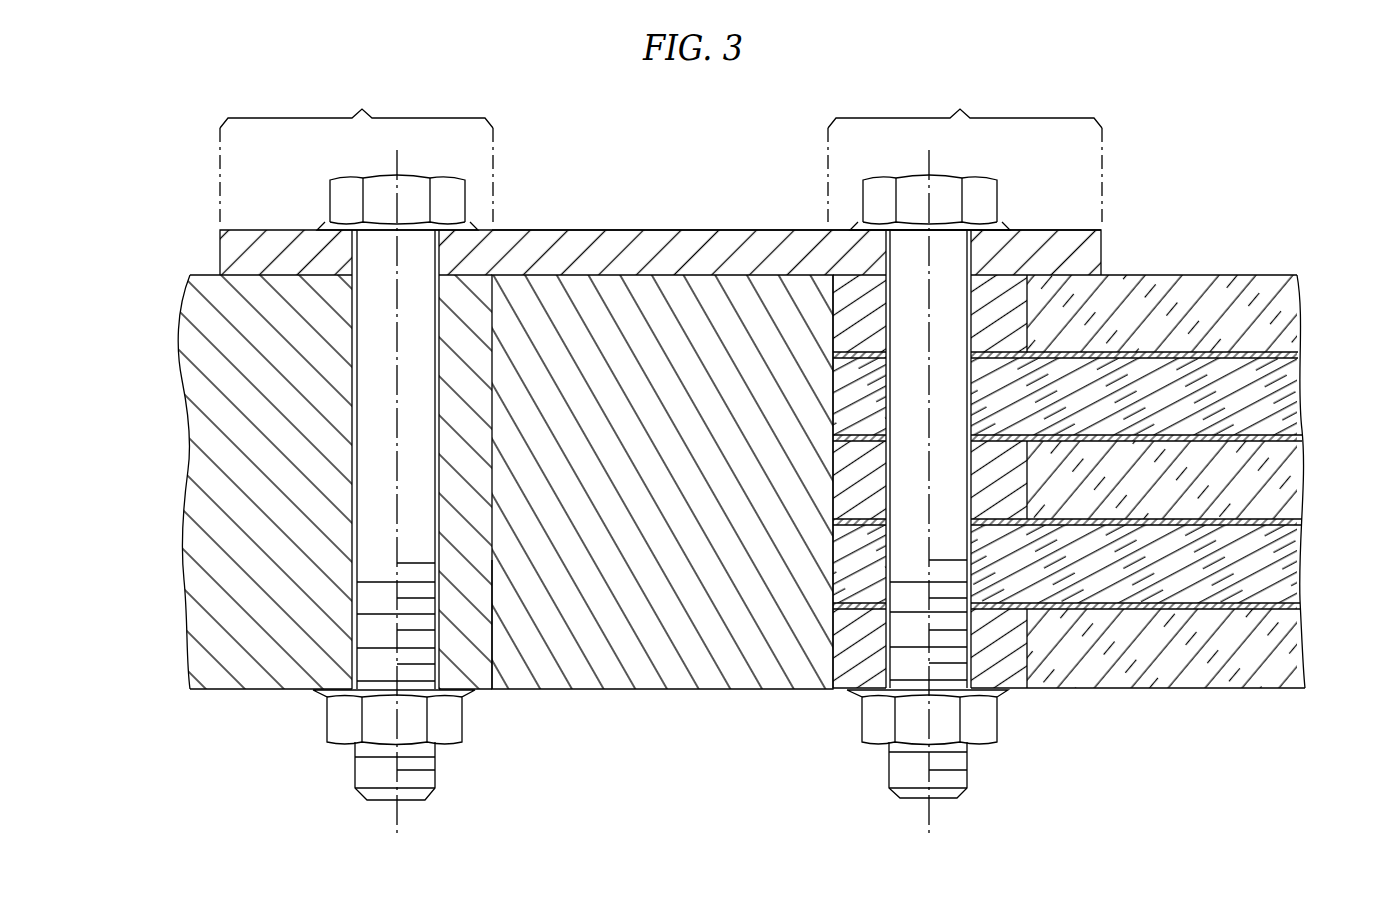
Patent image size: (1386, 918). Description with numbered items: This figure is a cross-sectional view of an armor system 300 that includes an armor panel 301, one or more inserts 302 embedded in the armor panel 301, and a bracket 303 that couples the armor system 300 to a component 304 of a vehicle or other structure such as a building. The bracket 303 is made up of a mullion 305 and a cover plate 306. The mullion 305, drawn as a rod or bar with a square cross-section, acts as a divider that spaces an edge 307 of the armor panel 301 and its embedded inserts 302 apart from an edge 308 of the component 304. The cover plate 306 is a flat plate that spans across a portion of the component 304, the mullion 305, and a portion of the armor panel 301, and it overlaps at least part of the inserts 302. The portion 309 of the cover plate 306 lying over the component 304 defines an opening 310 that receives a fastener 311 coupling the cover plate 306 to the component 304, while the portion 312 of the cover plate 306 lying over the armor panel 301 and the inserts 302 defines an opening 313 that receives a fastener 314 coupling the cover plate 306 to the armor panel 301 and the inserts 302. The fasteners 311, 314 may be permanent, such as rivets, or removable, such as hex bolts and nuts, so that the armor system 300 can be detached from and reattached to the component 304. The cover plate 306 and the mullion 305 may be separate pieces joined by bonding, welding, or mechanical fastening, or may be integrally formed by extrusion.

The armor system 300 is at (1255, 165).
The armor panel 301 is at (1268, 272).
The inserts 302 is at (998, 313).
The bracket 303 is at (703, 222).
The component 304 is at (265, 460).
The mullion 305 is at (590, 300).
The cover plate 306 is at (497, 245).
The edge of the armor panel 307 is at (832, 483).
The edge of the component 308 is at (492, 638).
The portion of the cover plate overlapping the component 309 is at (362, 109).
The opening 310 is at (337, 248).
The fastener 311 is at (375, 317).
The portion of the cover plate overlapping the armor panel 312 is at (960, 109).
The opening 313 is at (975, 250).
The fastener 314 is at (913, 255).